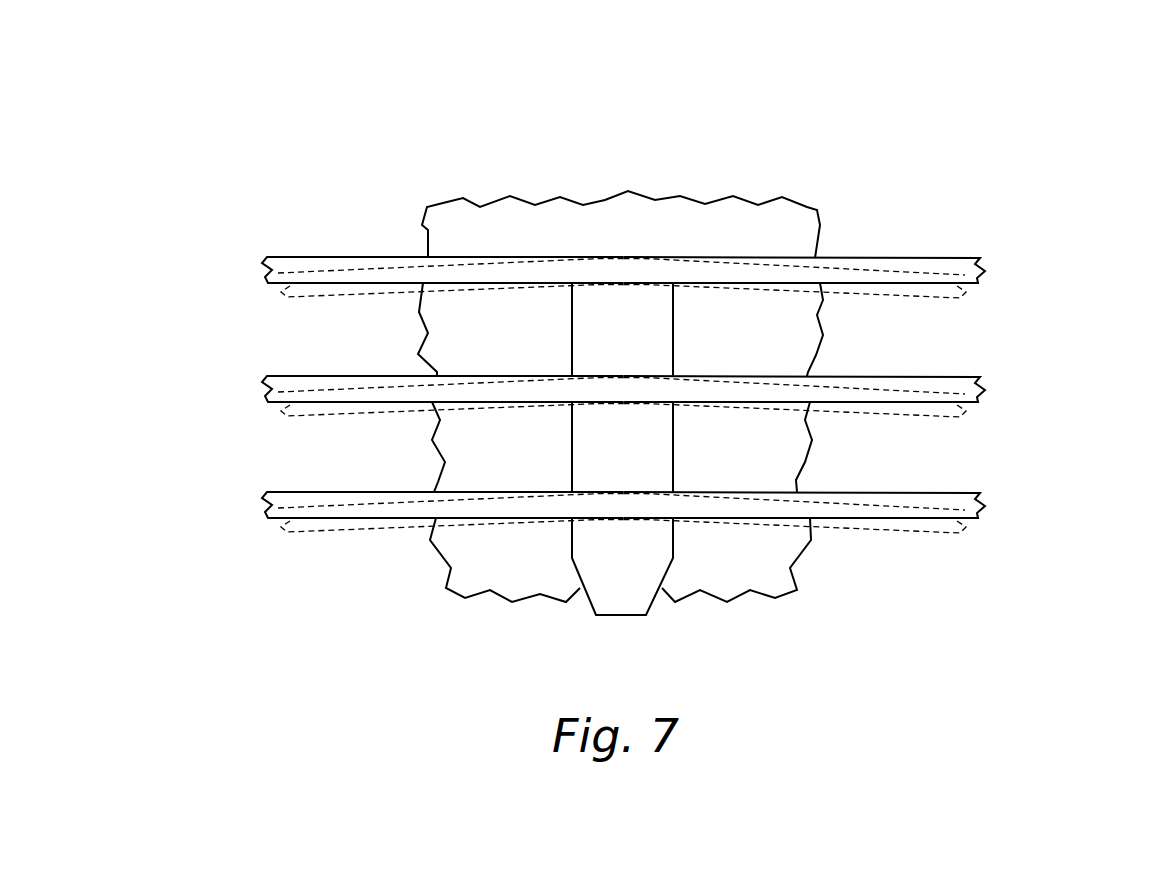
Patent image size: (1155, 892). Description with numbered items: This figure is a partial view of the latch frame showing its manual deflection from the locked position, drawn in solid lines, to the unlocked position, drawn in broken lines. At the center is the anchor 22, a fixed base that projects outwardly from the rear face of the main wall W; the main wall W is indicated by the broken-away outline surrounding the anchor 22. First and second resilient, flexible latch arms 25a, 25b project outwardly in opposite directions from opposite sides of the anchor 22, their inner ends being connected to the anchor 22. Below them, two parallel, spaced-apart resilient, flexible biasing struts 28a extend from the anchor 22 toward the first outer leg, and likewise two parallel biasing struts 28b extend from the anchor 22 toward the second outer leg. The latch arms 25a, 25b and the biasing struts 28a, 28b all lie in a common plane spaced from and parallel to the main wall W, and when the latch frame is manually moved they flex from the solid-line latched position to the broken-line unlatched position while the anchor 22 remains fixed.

The main wall W is at (643, 232).
The anchor 22 is at (637, 361).
The first latch arm 25a is at (944, 296).
The second latch arm 25b is at (303, 296).
The biasing struts 28a is at (944, 415).
The biasing struts 28b is at (303, 415).